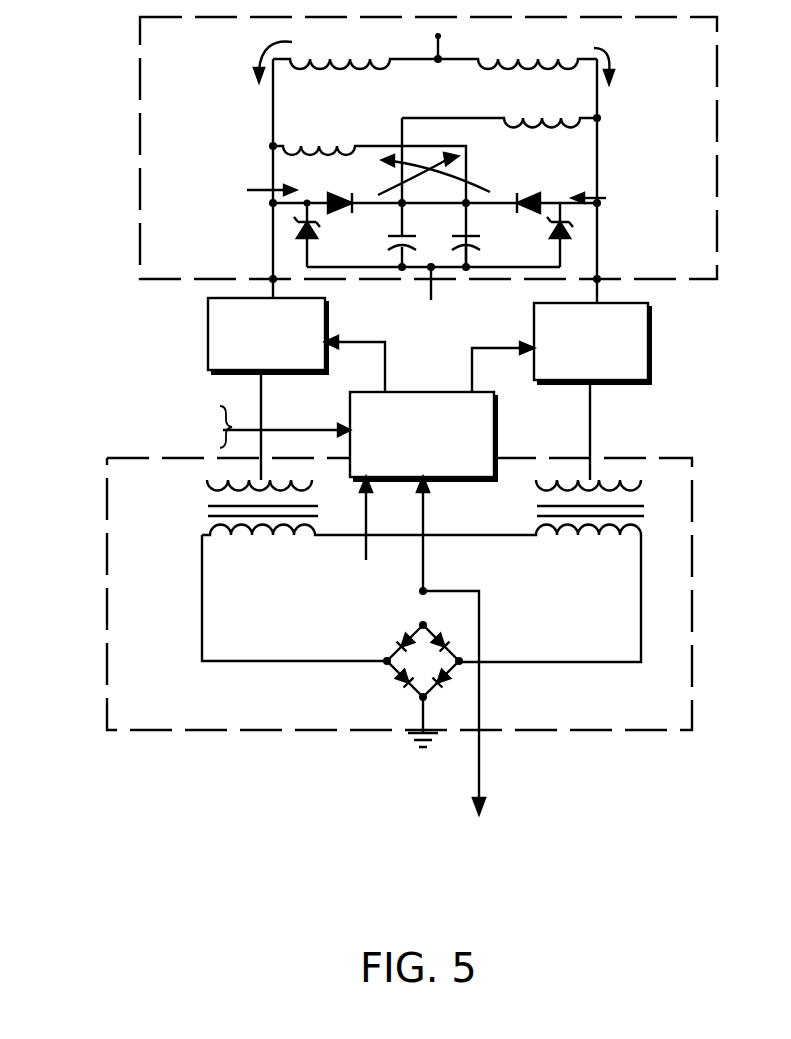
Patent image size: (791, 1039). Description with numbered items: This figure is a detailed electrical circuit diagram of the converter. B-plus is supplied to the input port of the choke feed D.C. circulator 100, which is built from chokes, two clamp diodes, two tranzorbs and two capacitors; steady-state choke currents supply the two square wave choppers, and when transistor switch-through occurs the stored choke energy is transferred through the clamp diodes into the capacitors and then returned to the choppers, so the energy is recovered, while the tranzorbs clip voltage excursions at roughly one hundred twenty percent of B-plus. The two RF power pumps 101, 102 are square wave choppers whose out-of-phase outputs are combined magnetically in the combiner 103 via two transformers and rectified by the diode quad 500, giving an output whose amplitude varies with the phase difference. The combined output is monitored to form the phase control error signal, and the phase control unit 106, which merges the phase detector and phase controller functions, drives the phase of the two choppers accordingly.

The choke feed D.C. circulator 100 is at (140, 113).
The RF power pump 101 is at (208, 322).
The RF power pump 102 is at (648, 323).
The combiner 103 is at (107, 598).
The phase control unit 106 is at (494, 414).
The diode quad 500 is at (390, 645).